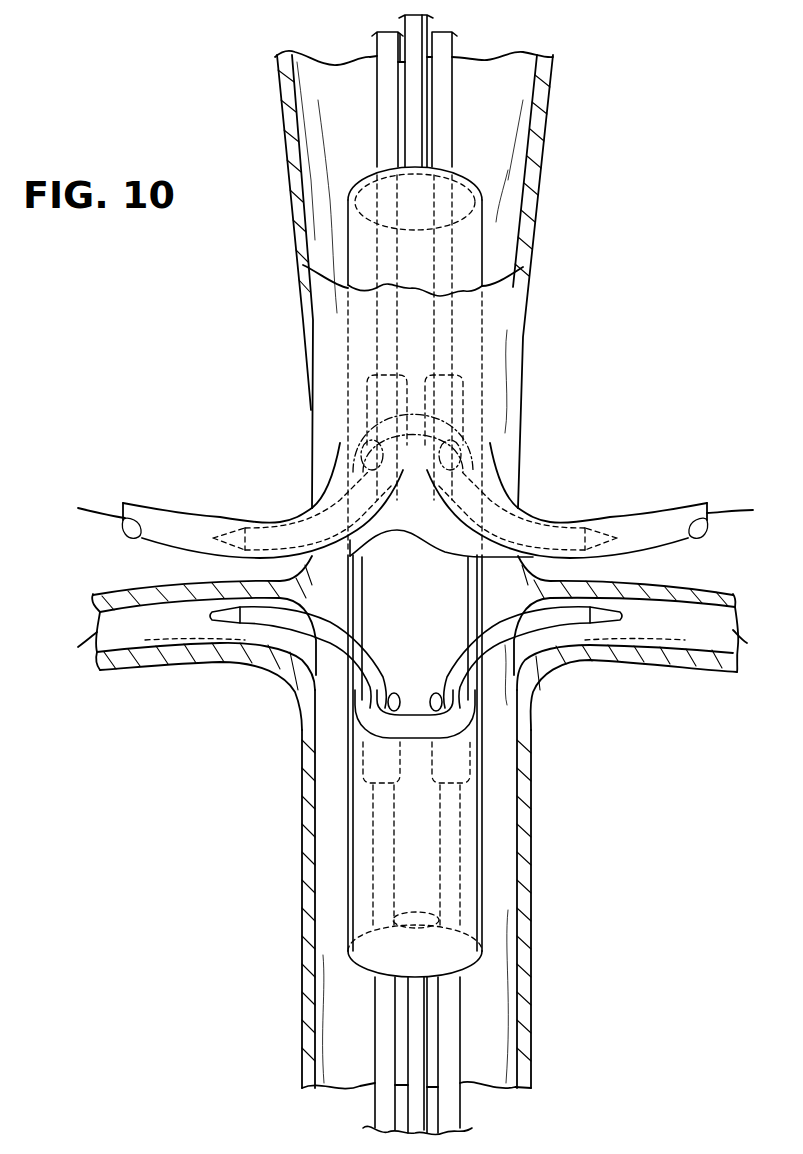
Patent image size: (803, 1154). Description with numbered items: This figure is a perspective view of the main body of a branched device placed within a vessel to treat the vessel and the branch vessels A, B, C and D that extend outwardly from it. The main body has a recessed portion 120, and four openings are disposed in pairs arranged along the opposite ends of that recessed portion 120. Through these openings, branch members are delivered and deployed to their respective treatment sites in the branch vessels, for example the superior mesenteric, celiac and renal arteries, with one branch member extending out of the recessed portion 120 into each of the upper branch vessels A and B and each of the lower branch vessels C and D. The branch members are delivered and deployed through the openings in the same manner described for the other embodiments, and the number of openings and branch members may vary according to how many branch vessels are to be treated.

The recessed portion 120 is at (433, 583).
The branch vessel A is at (167, 517).
The branch vessel B is at (670, 513).
The branch vessel C is at (160, 668).
The branch vessel D is at (665, 665).